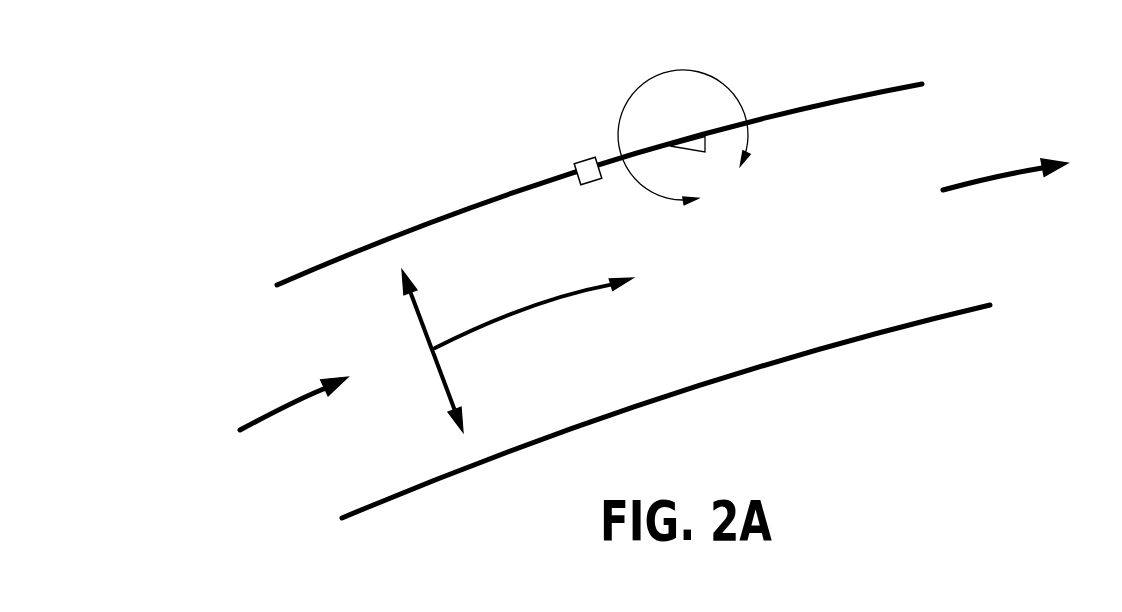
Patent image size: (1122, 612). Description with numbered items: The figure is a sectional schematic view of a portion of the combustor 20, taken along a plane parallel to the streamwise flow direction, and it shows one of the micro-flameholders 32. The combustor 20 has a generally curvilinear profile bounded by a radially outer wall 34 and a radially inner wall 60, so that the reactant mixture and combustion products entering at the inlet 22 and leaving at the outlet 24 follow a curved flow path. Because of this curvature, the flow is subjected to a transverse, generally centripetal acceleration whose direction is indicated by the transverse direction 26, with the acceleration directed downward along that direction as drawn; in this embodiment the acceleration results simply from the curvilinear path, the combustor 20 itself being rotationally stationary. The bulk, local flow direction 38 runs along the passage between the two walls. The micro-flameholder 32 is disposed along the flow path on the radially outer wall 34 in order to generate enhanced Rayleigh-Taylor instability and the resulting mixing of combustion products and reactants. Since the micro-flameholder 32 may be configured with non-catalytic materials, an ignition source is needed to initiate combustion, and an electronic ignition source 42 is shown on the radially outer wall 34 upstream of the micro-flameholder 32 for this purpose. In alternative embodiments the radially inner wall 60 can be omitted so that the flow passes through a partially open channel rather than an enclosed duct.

The combustor 20 is at (618, 322).
The inlet 22 is at (262, 405).
The outlet 24 is at (1007, 165).
The transverse direction 26 is at (443, 387).
The micro-flameholder 32 is at (705, 152).
The radially outer wall 34 is at (835, 107).
The local flow direction 38 is at (542, 302).
The electronic ignition source 42 is at (580, 160).
The radially inner wall 60 is at (478, 467).